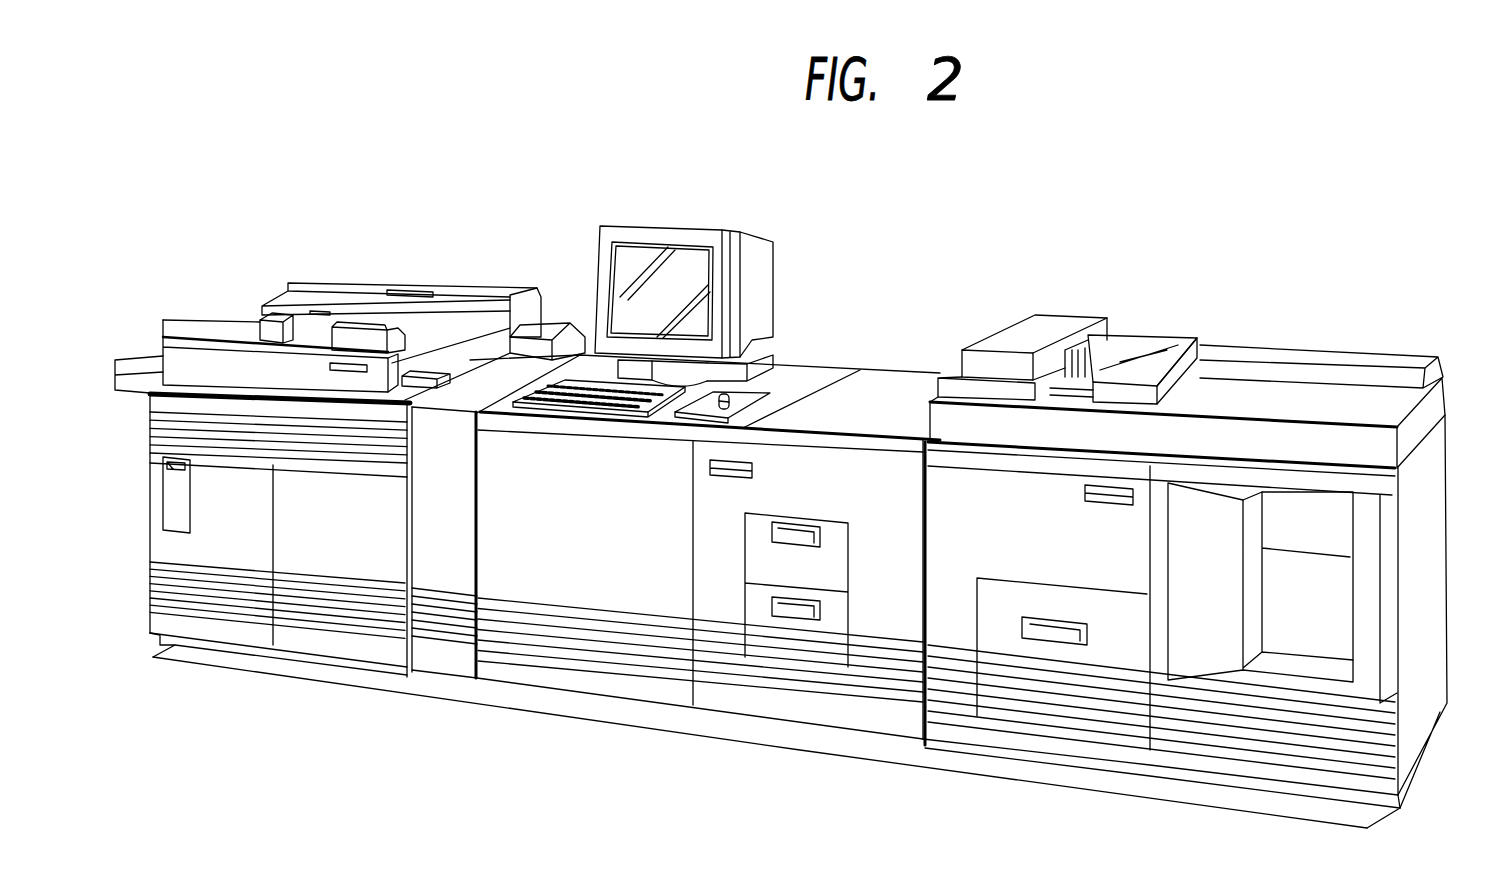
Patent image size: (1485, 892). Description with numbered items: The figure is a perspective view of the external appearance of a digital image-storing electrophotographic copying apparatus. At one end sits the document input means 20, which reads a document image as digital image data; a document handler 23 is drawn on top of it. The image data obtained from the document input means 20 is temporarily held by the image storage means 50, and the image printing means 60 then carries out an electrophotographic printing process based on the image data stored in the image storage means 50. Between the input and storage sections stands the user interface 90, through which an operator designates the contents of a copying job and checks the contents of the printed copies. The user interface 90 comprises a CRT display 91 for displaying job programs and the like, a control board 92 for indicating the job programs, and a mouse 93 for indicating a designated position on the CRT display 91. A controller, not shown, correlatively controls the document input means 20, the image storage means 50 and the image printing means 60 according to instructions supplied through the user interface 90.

The document input means 20 is at (377, 273).
The document handler 23 is at (428, 293).
The image storage means 50 is at (957, 320).
The image printing means 60 is at (1266, 341).
The user interface 90 is at (653, 223).
The CRT display 91 is at (623, 257).
The control board 92 is at (575, 407).
The mouse 93 is at (690, 413).